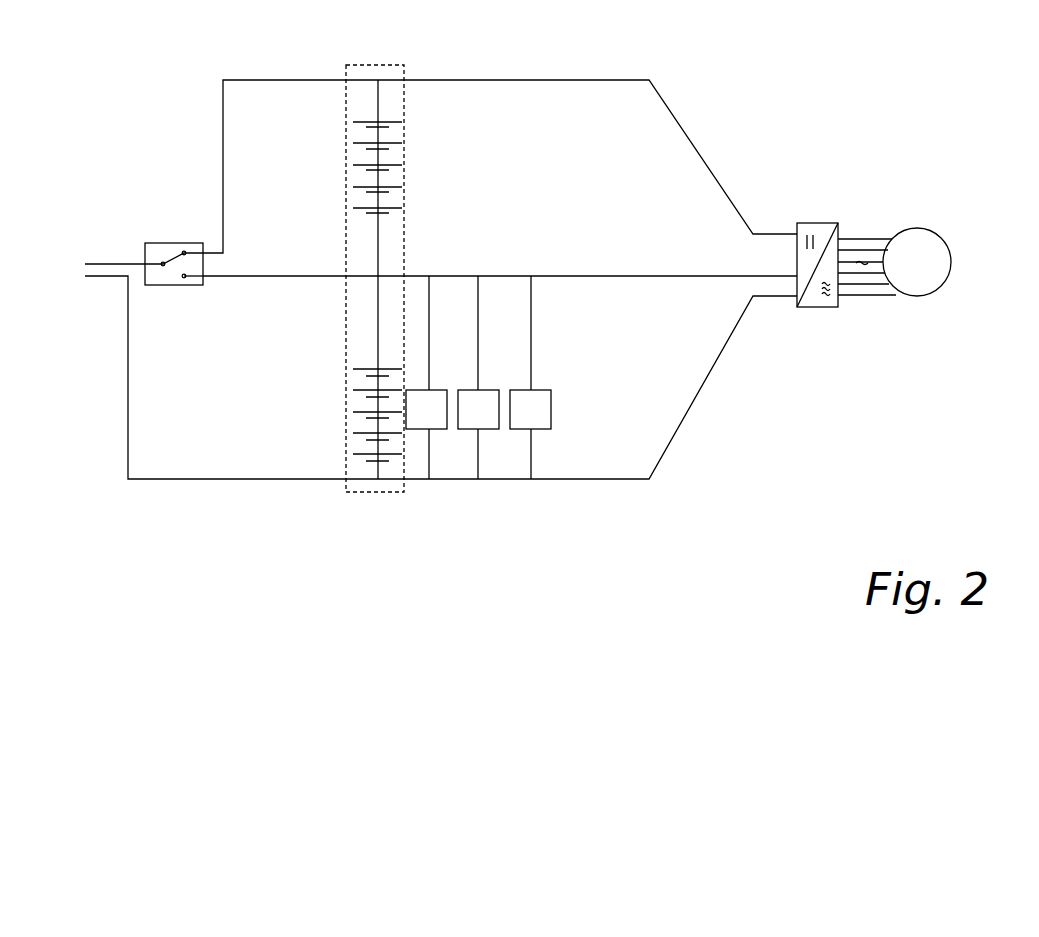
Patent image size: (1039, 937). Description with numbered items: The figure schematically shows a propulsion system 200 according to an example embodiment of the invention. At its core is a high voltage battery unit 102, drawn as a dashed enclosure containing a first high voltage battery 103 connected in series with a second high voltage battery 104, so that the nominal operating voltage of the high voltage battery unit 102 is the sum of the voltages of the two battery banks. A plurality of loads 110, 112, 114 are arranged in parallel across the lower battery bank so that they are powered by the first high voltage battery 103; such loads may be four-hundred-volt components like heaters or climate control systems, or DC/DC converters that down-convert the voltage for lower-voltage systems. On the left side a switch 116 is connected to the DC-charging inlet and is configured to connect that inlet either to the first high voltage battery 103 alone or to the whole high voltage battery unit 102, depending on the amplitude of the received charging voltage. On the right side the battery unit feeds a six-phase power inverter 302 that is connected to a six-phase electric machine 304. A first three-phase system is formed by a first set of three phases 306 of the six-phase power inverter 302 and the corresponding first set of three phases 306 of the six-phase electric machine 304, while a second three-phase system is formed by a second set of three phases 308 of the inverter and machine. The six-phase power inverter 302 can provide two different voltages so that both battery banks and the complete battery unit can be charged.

The propulsion system 200 is at (744, 92).
The high voltage battery unit 102 is at (384, 264).
The first high voltage battery 103 is at (372, 417).
The second high voltage battery 104 is at (377, 172).
The load 110 is at (436, 390).
The load 112 is at (489, 390).
The load 114 is at (545, 390).
The switch 116 is at (167, 243).
The six-phase power inverter 302 is at (805, 222).
The six-phase electric machine 304 is at (912, 230).
The first set of three phases 306 is at (860, 240).
The second set of three phases 308 is at (860, 296).